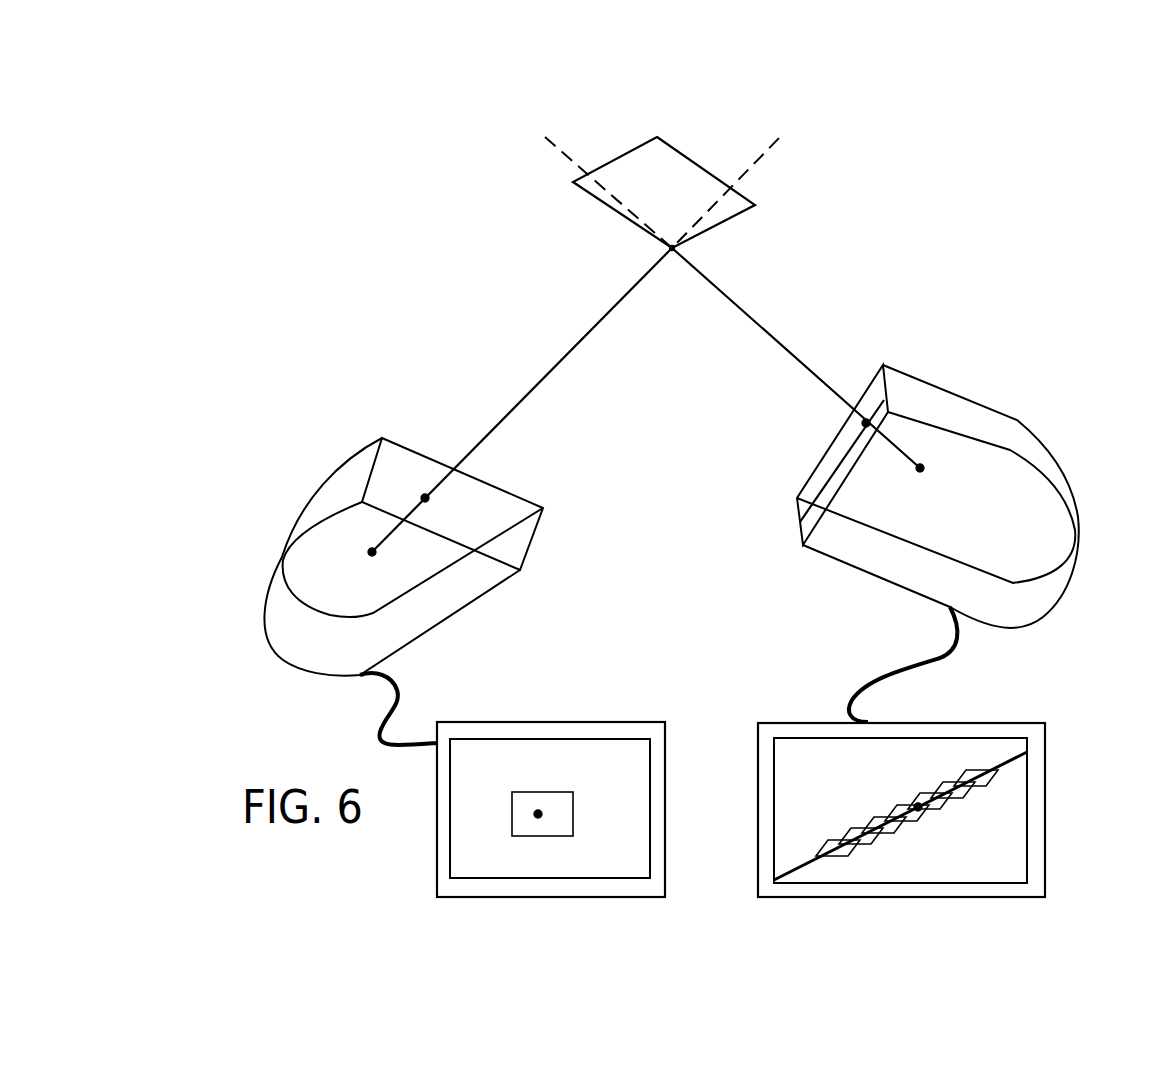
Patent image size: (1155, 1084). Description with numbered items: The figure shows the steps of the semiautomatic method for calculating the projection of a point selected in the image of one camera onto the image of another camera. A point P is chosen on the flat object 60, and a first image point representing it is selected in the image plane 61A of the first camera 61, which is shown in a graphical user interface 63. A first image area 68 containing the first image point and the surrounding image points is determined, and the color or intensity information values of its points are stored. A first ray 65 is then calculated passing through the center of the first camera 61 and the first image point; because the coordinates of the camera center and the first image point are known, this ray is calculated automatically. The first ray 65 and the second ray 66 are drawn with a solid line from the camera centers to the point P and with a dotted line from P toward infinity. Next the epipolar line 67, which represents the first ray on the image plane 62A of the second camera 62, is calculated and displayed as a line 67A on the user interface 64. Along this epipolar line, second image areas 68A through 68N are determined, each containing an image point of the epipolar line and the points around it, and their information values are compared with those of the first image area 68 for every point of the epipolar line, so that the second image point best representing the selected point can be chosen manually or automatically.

The flat object 60 is at (732, 218).
The first camera 61 is at (312, 488).
The image plane of the first camera 61A is at (385, 462).
The second camera 62 is at (1013, 420).
The image plane of the second camera 62A is at (875, 383).
The graphical user interface 63 is at (437, 865).
The user interface 64 is at (1045, 747).
The first ray 65 is at (588, 338).
The second ray 66 is at (762, 330).
The epipolar line 67 is at (832, 475).
The line representing the epipolar line 67A is at (992, 772).
The first image area 68 is at (573, 816).
The second image area 68A is at (822, 843).
The second image area 68N is at (982, 787).